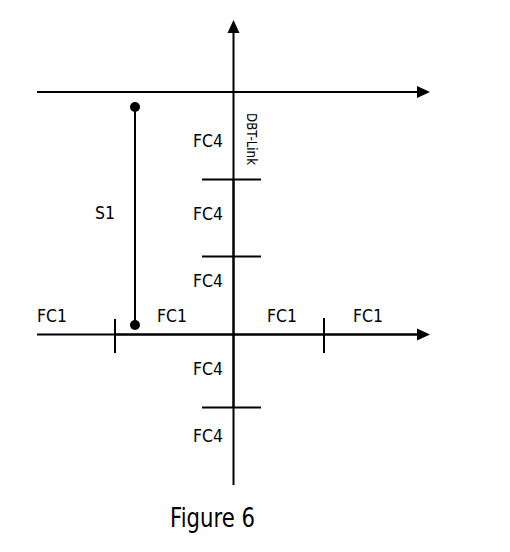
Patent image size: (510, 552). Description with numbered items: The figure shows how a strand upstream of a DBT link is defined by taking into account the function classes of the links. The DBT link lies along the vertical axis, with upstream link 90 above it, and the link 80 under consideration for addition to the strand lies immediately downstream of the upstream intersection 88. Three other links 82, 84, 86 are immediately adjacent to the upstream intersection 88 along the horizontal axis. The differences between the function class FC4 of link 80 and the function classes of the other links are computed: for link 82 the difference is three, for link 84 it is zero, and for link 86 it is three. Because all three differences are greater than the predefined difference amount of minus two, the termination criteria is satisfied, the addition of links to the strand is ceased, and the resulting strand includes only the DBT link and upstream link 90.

The link 80 is at (234, 291).
The link 82 is at (172, 334).
The link 84 is at (234, 388).
The link 86 is at (275, 336).
The upstream intersection 88 is at (336, 297).
The upstream link 90 is at (234, 225).